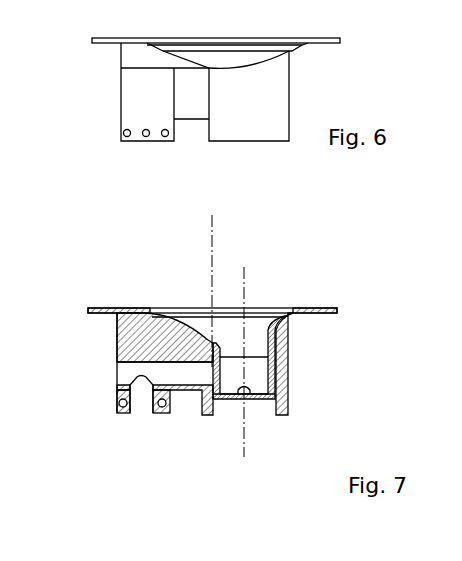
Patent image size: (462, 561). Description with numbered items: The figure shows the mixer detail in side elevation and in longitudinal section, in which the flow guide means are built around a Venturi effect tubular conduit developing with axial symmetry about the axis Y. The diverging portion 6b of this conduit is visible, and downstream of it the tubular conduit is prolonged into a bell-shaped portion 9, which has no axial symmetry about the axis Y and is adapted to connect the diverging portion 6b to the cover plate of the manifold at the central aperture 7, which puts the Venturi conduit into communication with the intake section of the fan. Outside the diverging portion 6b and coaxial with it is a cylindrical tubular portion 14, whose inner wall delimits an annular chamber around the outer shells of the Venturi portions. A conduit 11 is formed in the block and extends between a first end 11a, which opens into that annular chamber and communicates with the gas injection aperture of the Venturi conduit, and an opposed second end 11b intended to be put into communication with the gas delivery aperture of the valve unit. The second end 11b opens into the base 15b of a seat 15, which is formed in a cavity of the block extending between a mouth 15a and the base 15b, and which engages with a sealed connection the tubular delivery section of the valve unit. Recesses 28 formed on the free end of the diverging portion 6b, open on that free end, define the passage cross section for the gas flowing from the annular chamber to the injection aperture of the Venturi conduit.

The axis Y is at (249, 279).
The central aperture 7 is at (293, 308).
The bell-shaped portion 9 is at (178, 308).
The conduit 11 is at (118, 370).
The first end of the conduit 11a is at (217, 405).
The second end of the conduit 11b is at (117, 382).
The cylindrical tubular portion 14 is at (284, 395).
The seat 15 is at (148, 413).
The mouth of the seat 15a is at (161, 415).
The base of the seat 15b is at (130, 413).
The recesses 28 is at (250, 400).
The diverging portion 6b is at (275, 372).